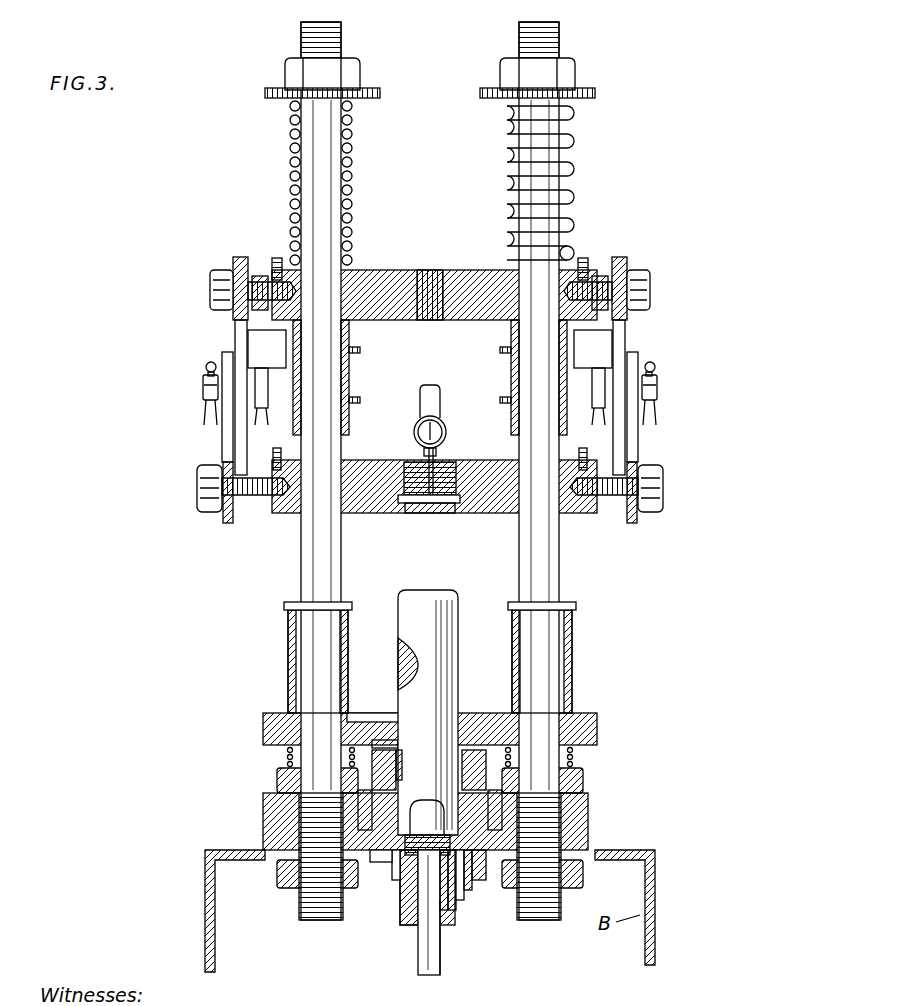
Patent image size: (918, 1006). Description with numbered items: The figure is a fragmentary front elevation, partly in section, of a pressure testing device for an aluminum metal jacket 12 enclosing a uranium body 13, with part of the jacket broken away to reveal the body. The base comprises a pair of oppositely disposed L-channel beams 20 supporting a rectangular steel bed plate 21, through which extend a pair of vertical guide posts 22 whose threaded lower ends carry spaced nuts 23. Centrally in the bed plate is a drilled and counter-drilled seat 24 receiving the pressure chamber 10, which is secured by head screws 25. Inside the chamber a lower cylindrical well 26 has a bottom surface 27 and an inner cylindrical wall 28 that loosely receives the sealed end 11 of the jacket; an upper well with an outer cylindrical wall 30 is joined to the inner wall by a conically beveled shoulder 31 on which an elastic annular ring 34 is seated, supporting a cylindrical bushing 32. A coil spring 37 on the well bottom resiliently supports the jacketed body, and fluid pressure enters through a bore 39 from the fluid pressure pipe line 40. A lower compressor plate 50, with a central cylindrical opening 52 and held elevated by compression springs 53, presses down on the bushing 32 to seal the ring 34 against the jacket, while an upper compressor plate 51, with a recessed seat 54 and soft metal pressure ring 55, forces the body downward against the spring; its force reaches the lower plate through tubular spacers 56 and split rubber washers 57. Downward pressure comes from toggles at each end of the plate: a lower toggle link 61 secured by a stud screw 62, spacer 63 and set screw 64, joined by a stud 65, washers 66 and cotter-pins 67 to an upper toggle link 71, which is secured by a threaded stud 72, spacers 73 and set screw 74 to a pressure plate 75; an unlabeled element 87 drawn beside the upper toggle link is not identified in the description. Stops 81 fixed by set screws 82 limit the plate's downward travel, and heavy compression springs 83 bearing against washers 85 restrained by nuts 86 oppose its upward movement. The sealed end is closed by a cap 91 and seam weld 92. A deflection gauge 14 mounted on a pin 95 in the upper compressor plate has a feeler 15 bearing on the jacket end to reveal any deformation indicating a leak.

The pressure chamber 10 is at (455, 880).
The sealed end 11 is at (462, 865).
The metal jacket 12 is at (455, 700).
The uranium body 13 is at (398, 666).
The deflection gauge 14 is at (442, 424).
The feeler 15 is at (450, 465).
The L-channel beams 20 is at (205, 913).
The bed plate 21 is at (590, 810).
The guide posts 22 is at (301, 568).
The nuts 23 is at (277, 774).
The seat 24 is at (382, 862).
The head screws 25 is at (434, 799).
The lower cylindrical well 26 is at (403, 857).
The bottom surface 27 is at (415, 857).
The inner cylindrical wall 28 is at (396, 855).
The outer cylindrical wall 30 is at (480, 870).
The conically beveled shoulder 31 is at (470, 860).
The cylindrical bushing 32 is at (472, 750).
The elastic annular ring 34 is at (414, 765).
The coil spring 37 is at (448, 905).
The bore 39 is at (443, 928).
The fluid pressure pipe line 40 is at (418, 965).
The lower compressor plate 50 is at (590, 716).
The upper compressor plate 51 is at (498, 512).
The cylindrical opening 52 is at (390, 740).
The compression springs 53 is at (287, 757).
The recessed seat 54 is at (460, 513).
The pressure ring 55 is at (400, 503).
The tubular spacers 56 is at (288, 625).
The split rubber washers 57 is at (284, 606).
The lower toggle link 61 is at (222, 430).
The stud screw 62 is at (197, 488).
The spacer 63 is at (233, 523).
The set screw 64 is at (277, 455).
The stud 65 is at (203, 385).
The washers 66 is at (208, 372).
The cotter-pins 67 is at (206, 366).
The upper toggle link 71 is at (235, 335).
The threaded stud 72 is at (210, 292).
The spacers 73 is at (258, 276).
The set screw 74 is at (278, 258).
The pressure plate 75 is at (378, 272).
The stops 81 is at (349, 386).
The set screws 82 is at (360, 350).
The heavy compression springs 83 is at (290, 150).
The washers 85 is at (272, 98).
The nuts 86 is at (290, 70).
The block 87 is at (592, 362).
The cap 91 is at (428, 836).
The seam weld 92 is at (434, 812).
The pin 95 is at (420, 402).